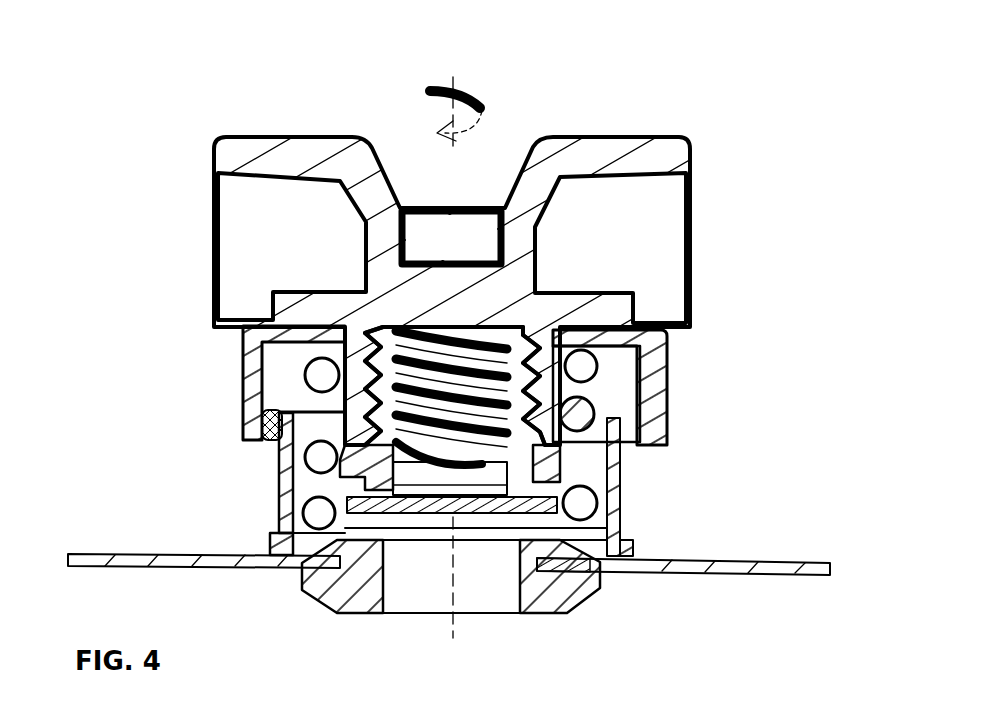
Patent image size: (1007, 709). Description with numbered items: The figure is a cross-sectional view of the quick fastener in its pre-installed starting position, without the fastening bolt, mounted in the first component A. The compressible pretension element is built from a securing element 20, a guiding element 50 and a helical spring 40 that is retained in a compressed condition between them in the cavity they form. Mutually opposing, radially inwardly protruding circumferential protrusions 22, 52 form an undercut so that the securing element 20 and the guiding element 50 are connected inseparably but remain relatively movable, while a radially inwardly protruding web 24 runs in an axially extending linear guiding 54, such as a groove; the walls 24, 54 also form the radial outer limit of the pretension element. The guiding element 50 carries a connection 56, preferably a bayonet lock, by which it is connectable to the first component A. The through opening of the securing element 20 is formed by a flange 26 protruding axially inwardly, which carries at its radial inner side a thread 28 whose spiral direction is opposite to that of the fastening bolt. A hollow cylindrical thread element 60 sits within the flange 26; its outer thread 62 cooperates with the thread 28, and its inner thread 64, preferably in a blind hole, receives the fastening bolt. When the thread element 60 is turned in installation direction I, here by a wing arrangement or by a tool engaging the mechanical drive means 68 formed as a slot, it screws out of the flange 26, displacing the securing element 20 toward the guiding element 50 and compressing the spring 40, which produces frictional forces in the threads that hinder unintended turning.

The securing element 20 is at (672, 420).
The protrusion 22 is at (268, 447).
The web 24 is at (238, 367).
The flange 26 is at (565, 390).
The thread 28 is at (585, 355).
The spring 40 is at (620, 470).
The guiding element 50 is at (620, 483).
The protrusion 52 is at (268, 417).
The linear guiding 54 is at (282, 497).
The connection 56 is at (550, 603).
The hollow cylindrical thread element 60 is at (250, 217).
The outer thread 62 is at (687, 330).
The inner thread 64 is at (505, 358).
The mechanical drive means 68 is at (427, 237).
The first component A is at (720, 572).
The installation direction I is at (475, 65).